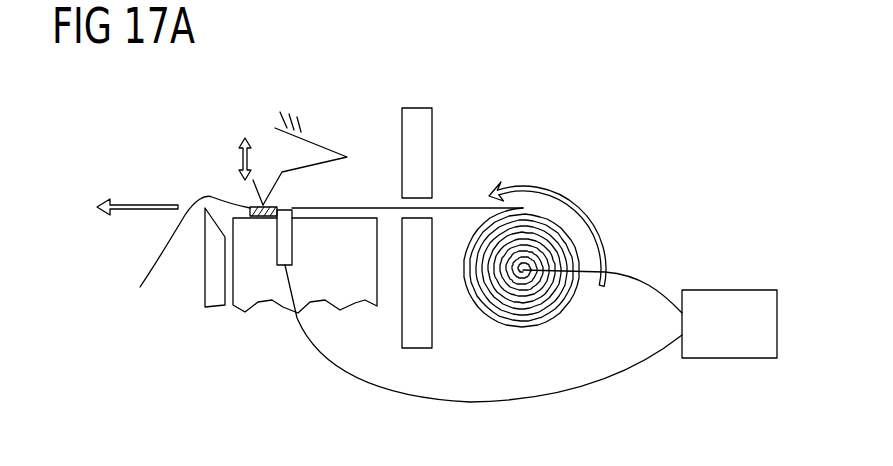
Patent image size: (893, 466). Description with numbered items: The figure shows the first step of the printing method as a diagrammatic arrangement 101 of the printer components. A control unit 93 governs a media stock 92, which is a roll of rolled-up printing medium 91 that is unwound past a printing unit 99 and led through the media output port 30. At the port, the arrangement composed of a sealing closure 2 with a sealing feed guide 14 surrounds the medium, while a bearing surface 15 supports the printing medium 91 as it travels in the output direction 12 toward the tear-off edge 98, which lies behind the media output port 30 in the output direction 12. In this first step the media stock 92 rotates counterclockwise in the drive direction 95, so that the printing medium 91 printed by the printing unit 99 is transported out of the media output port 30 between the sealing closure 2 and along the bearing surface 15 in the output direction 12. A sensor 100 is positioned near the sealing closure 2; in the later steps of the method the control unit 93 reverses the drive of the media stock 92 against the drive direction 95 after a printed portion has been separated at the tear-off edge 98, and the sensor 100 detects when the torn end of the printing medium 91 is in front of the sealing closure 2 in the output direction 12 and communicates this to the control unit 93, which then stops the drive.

The apparatus for producing a web 101 is at (140, 151).
The media output port 30 is at (228, 148).
The sealing closure 2 is at (275, 188).
The sealing feed guide 14 is at (250, 206).
The output direction 12 is at (127, 210).
The tear-off edge 98 is at (208, 288).
The bearing surface 15 is at (264, 219).
The sensor 100 is at (285, 243).
The printing unit 99 is at (418, 123).
The printing medium 91 is at (463, 208).
The media stock 92 is at (547, 303).
The drive direction 95 is at (583, 215).
The control unit 93 is at (732, 300).